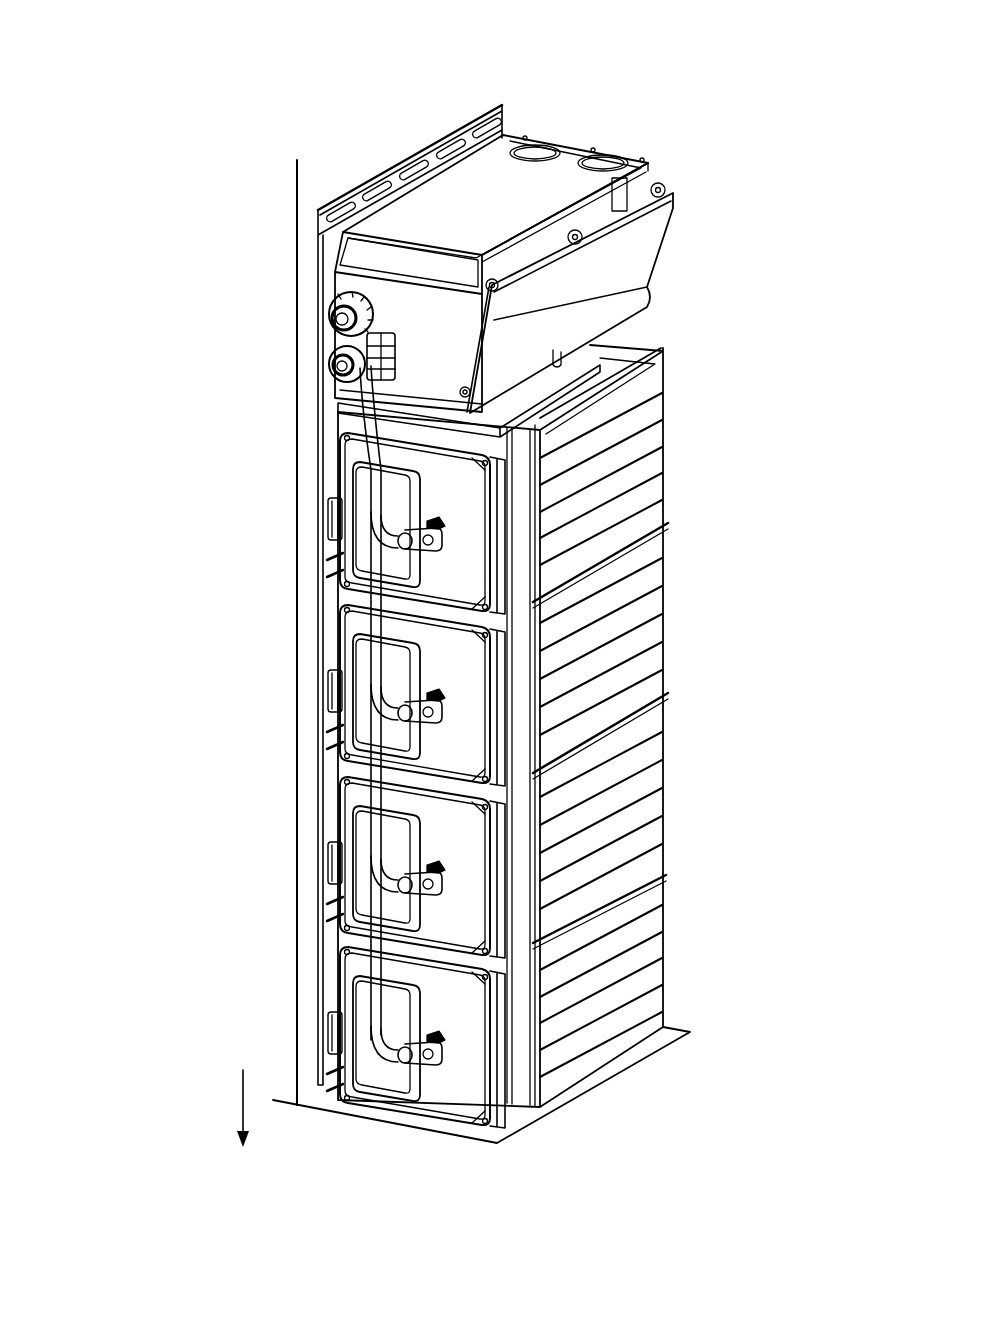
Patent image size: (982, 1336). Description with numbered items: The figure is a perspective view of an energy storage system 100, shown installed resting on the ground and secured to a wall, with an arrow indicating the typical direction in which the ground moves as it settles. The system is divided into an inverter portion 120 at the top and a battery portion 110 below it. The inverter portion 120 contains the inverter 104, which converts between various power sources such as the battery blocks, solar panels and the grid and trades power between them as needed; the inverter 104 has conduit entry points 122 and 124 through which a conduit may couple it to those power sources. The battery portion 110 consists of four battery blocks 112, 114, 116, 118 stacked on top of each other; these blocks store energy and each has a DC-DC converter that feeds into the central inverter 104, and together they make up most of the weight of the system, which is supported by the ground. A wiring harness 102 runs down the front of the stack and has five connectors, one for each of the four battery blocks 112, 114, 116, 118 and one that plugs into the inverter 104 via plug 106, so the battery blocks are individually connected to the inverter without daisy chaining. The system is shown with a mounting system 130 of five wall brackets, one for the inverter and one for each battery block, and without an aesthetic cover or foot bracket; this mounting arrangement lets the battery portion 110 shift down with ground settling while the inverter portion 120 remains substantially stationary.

The energy storage system 100 is at (150, 48).
The wiring harness 102 is at (352, 465).
The inverter 104 is at (365, 290).
The plug 106 is at (328, 350).
The battery portion 110 is at (777, 1147).
The battery block 112 is at (643, 446).
The battery block 114 is at (643, 603).
The battery block 116 is at (643, 780).
The battery block 118 is at (643, 948).
The inverter portion 120 is at (777, 317).
The conduit entry point 122 is at (330, 312).
The conduit entry point 124 is at (328, 372).
The mounting system 130 is at (325, 905).